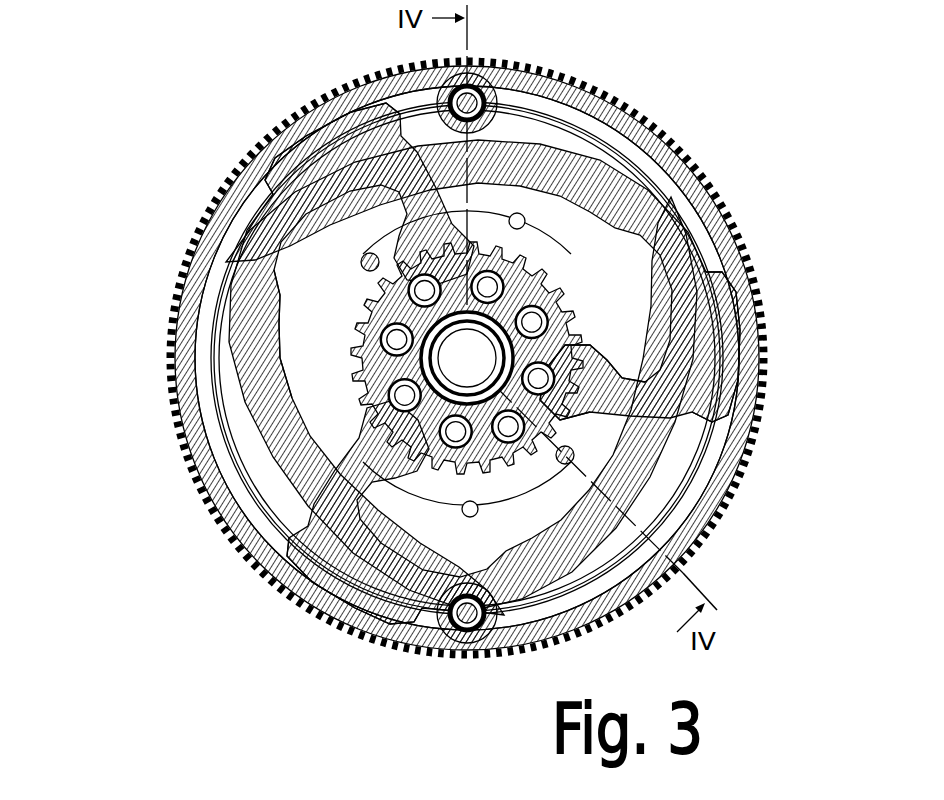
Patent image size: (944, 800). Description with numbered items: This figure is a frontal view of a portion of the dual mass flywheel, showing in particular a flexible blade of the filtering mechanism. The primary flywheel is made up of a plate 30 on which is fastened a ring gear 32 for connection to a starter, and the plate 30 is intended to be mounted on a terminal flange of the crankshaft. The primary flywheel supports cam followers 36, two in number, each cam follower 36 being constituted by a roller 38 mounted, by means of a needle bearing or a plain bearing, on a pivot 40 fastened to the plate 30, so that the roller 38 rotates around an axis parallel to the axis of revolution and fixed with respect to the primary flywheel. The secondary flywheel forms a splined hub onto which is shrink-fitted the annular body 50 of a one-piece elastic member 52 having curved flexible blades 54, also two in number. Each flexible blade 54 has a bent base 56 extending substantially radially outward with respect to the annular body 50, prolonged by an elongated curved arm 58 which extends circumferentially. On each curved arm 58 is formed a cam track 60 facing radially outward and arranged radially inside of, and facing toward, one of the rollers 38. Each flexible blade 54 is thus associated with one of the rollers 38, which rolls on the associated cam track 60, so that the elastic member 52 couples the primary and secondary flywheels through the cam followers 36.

The plate 30 is at (742, 418).
The ring gear 32 is at (752, 477).
The cam follower 36 is at (403, 407).
The roller 38 is at (470, 640).
The pivot 40 is at (430, 626).
The annular body 50 is at (360, 420).
The elastic member 52 is at (313, 178).
The flexible blade 54 is at (97, 272).
The bent base 56 is at (263, 327).
The elongated curved arm 58 is at (237, 400).
The cam track 60 is at (425, 135).